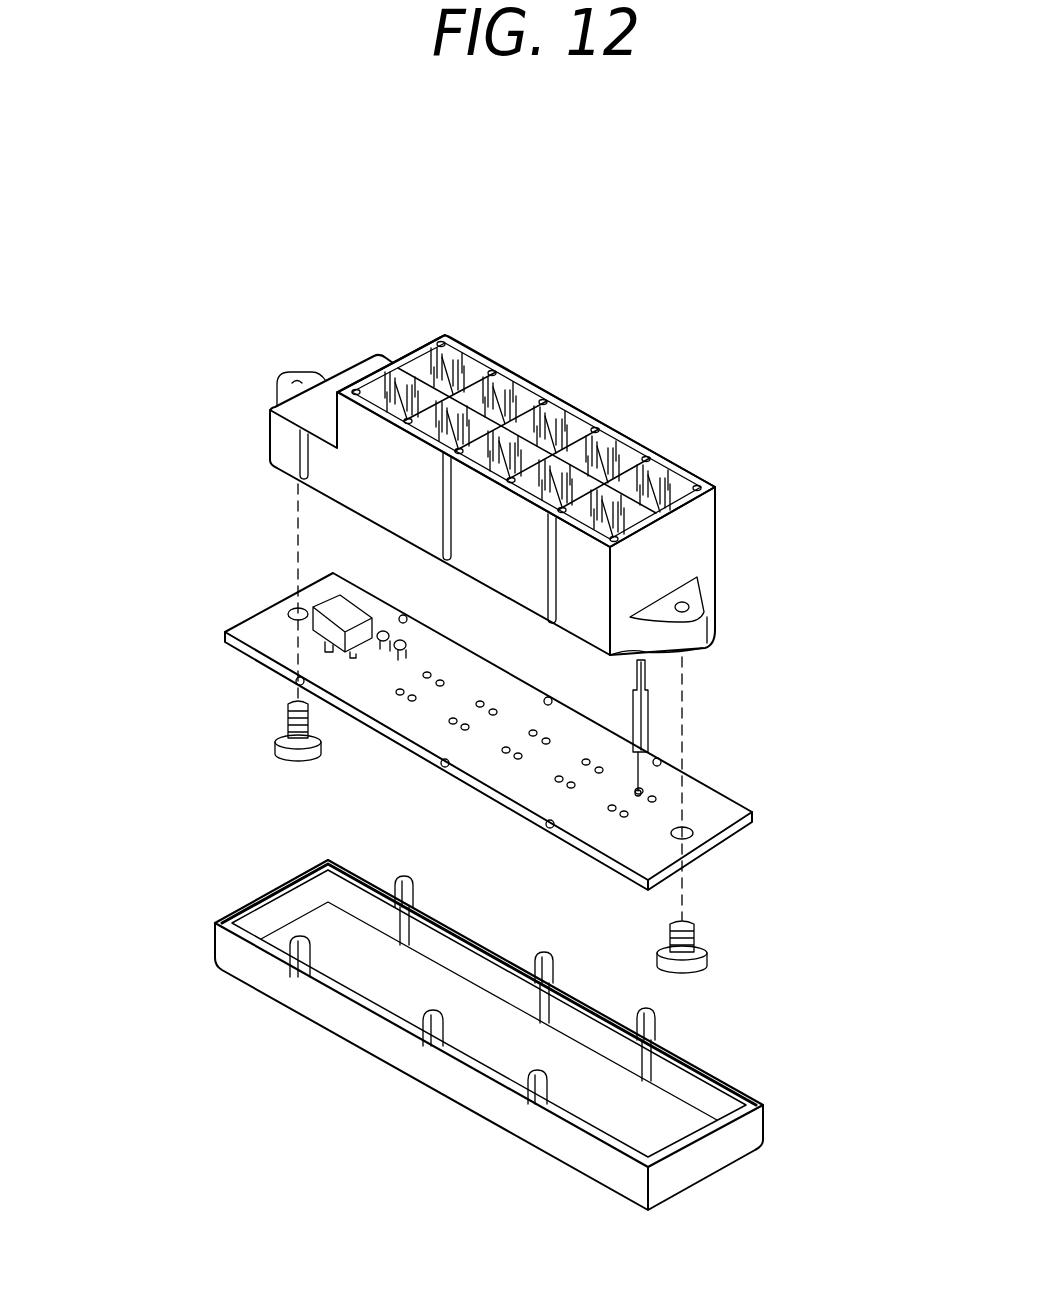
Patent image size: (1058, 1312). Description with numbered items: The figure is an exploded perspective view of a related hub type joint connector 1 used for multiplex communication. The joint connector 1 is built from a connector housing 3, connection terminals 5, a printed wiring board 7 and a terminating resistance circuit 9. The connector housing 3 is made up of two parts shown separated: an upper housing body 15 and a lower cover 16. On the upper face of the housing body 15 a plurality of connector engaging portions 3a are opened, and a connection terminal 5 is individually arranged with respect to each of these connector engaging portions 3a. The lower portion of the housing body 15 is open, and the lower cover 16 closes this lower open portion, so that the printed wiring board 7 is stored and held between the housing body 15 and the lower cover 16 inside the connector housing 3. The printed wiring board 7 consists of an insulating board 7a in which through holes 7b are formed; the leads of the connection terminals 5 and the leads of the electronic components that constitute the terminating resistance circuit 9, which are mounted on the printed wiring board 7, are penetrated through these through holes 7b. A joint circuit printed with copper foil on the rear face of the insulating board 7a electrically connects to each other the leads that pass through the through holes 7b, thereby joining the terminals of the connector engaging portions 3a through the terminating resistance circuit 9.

The hub type joint connector 1 is at (246, 398).
The connector housing 3 is at (128, 662).
The connector engaging portions 3a is at (634, 437).
The connection terminals 5 is at (643, 717).
The printed wiring board 7 is at (745, 850).
The insulating board 7a is at (717, 813).
The through holes 7b is at (627, 817).
The terminating resistance circuit 9 is at (368, 664).
The housing body 15 is at (266, 438).
The lower cover 16 is at (246, 903).